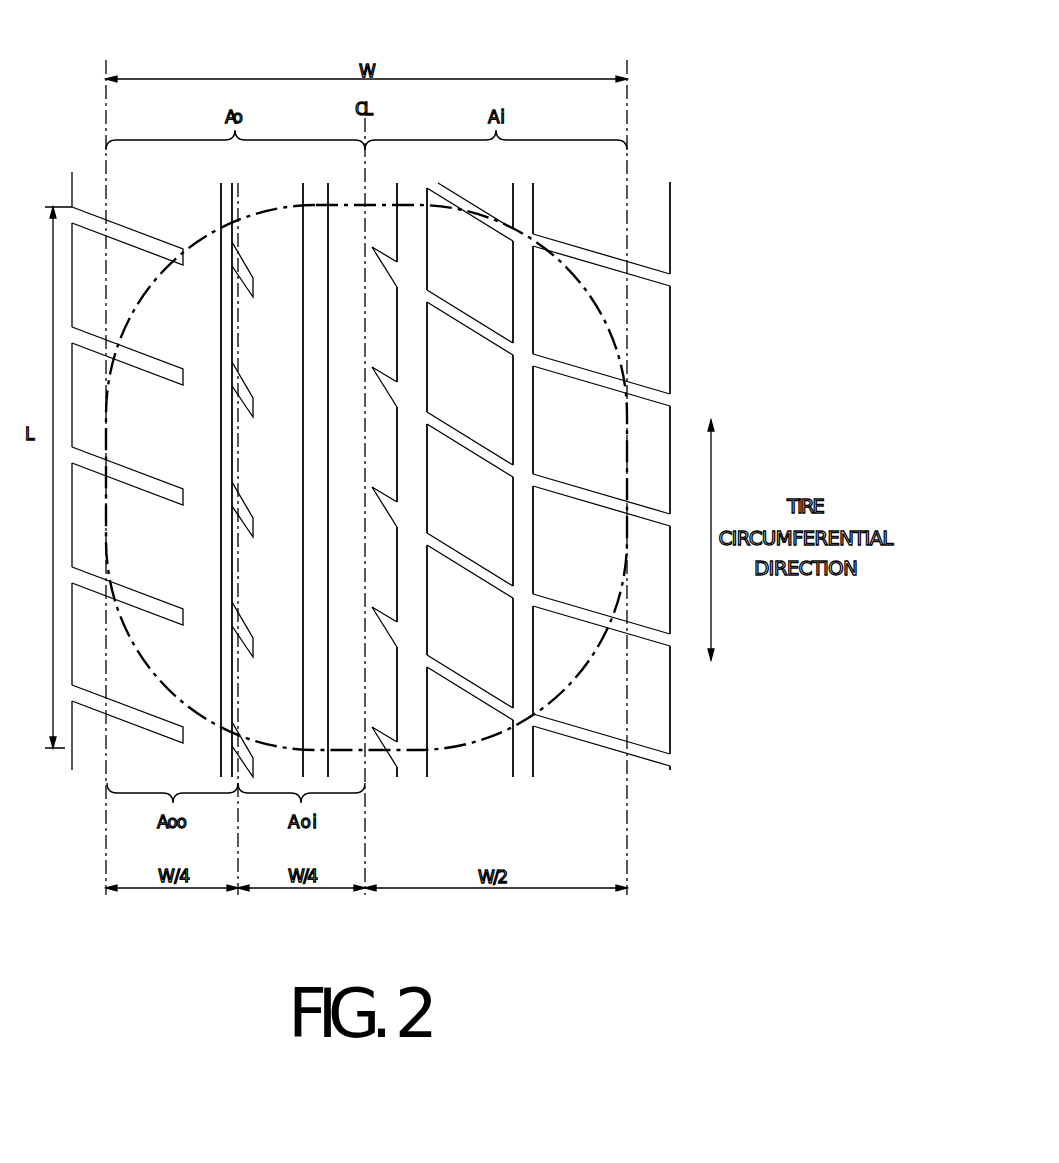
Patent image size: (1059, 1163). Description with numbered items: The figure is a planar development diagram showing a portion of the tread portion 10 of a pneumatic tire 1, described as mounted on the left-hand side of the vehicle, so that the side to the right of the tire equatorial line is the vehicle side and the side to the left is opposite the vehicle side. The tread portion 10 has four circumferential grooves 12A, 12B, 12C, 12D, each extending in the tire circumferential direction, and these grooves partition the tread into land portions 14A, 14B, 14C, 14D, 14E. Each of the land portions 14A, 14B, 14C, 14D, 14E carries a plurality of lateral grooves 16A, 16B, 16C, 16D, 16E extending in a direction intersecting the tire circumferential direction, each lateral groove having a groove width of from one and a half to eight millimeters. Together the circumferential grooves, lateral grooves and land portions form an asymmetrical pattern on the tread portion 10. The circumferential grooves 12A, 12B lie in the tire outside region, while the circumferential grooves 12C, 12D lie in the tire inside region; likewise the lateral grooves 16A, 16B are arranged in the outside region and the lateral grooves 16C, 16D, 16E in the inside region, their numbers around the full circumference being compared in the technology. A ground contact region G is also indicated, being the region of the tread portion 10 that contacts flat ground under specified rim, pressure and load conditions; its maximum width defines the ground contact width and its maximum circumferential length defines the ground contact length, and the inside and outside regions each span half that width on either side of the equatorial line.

The pneumatic tire 1 is at (674, 140).
The tread portion 10 is at (677, 218).
The circumferential groove 12A is at (222, 207).
The circumferential groove 12B is at (313, 197).
The circumferential groove 12C is at (405, 197).
The circumferential groove 12D is at (528, 207).
The land portion 14A is at (145, 692).
The land portion 14B is at (292, 722).
The land portion 14C is at (370, 732).
The land portion 14D is at (490, 677).
The land portion 14E is at (612, 712).
The lateral groove 16A is at (120, 470).
The lateral groove 16B is at (250, 510).
The lateral groove 16C is at (387, 387).
The lateral groove 16D is at (457, 310).
The lateral groove 16E is at (558, 370).
The ground contact region G is at (597, 460).